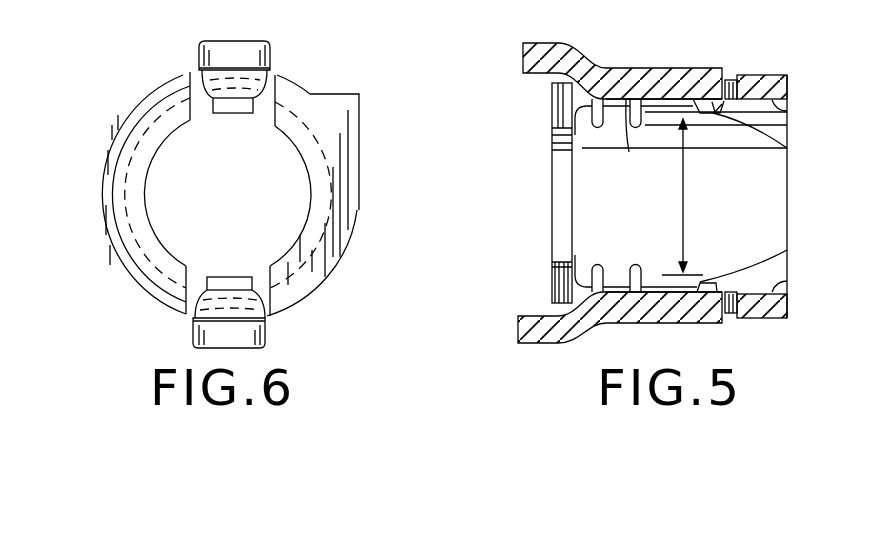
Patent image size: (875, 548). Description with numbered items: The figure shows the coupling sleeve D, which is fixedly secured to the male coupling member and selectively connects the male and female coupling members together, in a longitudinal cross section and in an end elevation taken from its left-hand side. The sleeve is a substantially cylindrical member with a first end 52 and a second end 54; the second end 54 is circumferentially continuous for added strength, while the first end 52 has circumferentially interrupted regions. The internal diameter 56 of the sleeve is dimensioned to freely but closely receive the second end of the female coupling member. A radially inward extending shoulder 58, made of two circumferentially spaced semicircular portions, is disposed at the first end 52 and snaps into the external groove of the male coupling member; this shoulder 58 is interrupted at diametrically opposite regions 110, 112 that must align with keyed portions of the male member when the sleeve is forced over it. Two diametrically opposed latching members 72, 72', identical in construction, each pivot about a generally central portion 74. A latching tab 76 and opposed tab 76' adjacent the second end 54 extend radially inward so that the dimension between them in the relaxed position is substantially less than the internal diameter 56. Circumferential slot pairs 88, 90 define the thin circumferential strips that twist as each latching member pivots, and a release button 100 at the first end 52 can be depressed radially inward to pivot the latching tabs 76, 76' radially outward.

In FIG. 5, the first end 52 is at (550, 280).
In FIG. 5, the second end 54 is at (787, 305).
In FIG. 6, the internal diameter 56 is at (312, 165).
In FIG. 5, the internal diameter 56 is at (789, 113).
In FIG. 6, the shoulder 58 is at (313, 212).
In FIG. 5, the latching member 72 is at (604, 40).
In FIG. 5, the latching member 72' is at (565, 368).
In FIG. 5, the central portion 74 is at (632, 80).
In FIG. 5, the latching tab 76 is at (775, 140).
In FIG. 5, the latching tab 76' is at (768, 261).
In FIG. 5, the circumferential slot pair 88 is at (578, 108).
In FIG. 5, the circumferential slot pair 90 is at (642, 243).
In FIG. 5, the release button 100 is at (560, 43).
In FIG. 6, the interrupted region 110 is at (275, 115).
In FIG. 6, the interrupted region 112 is at (187, 267).
In FIG. 6, the coupling sleeve D is at (122, 282).